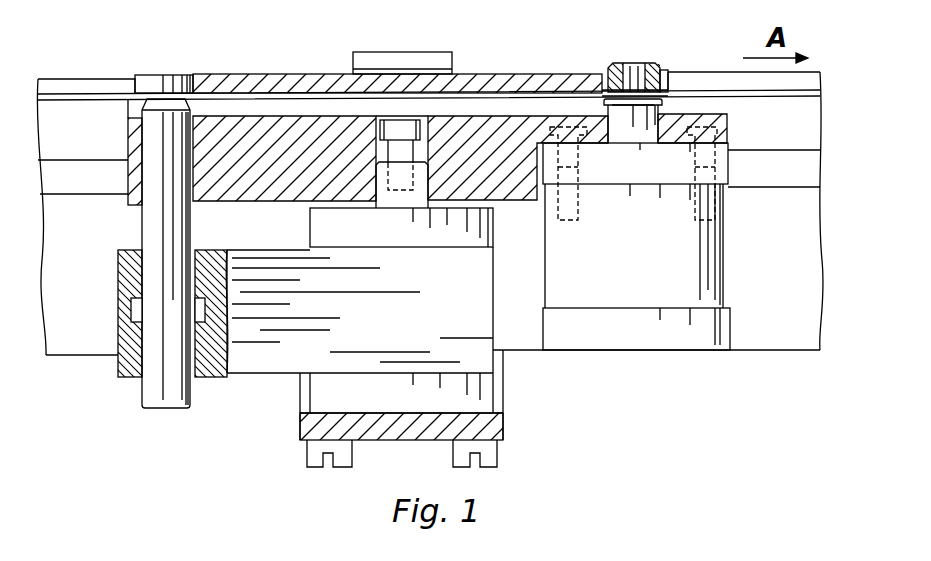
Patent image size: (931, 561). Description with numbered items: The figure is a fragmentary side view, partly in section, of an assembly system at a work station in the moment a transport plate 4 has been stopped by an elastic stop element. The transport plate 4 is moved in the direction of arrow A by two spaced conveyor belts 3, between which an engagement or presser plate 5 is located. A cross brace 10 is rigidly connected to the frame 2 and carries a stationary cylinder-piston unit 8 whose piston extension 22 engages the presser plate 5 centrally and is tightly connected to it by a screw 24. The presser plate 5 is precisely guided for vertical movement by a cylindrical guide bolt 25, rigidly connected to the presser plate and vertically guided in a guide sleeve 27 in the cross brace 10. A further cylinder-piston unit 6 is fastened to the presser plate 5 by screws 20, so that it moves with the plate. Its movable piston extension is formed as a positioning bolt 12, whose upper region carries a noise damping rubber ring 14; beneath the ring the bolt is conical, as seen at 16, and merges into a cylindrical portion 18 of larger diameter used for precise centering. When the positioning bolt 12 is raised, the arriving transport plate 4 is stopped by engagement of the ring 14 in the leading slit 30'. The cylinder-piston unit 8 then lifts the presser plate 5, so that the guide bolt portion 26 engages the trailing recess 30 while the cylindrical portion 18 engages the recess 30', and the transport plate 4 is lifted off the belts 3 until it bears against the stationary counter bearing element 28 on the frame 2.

The frame 2 is at (776, 335).
The conveyor belts 3 is at (86, 100).
The transport plate 4 is at (525, 81).
The presser plate 5 is at (277, 130).
The auxiliary cylinder-piston unit 6 is at (686, 260).
The cylinder-piston unit 8 is at (458, 337).
The cross brace 10 is at (243, 360).
The positioning bolt 12 is at (673, 104).
The rubber ring 14 is at (675, 42).
The conical portion 16 is at (613, 84).
The cylindrical portion 18 is at (650, 126).
The screws 20 is at (705, 201).
The piston extension 22 is at (432, 180).
The screw 24 is at (397, 150).
The cylindrical guide bolt 25 is at (153, 229).
The guide bolt positioning portion 26 is at (174, 112).
The guide sleeve 27 is at (130, 360).
The counter bearing element 28 is at (432, 62).
The recess 30 is at (175, 56).
The leading recess 30' is at (691, 46).